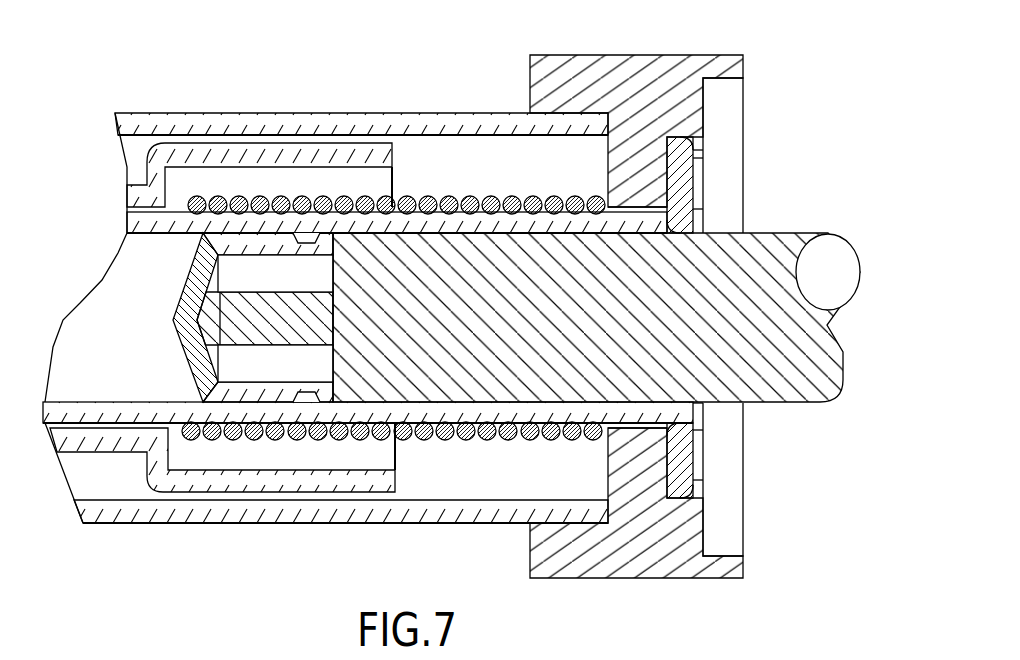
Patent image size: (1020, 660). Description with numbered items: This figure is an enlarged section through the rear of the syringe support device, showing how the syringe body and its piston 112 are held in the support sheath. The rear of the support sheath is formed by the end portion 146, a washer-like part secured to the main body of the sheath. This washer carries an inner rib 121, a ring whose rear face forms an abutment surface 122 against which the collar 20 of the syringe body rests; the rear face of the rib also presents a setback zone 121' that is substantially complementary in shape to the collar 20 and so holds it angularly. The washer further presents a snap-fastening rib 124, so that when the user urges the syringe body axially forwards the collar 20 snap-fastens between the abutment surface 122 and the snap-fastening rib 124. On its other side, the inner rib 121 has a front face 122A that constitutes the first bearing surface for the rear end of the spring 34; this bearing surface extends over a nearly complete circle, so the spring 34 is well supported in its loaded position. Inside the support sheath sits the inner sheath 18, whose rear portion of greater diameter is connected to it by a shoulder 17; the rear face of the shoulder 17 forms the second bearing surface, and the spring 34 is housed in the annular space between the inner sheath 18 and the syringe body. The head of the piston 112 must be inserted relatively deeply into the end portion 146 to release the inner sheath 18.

The end portion 146 is at (621, 80).
The setback zone 121' is at (760, 147).
The inner rib 121 is at (730, 175).
The piston 112 is at (764, 244).
The collar 20 is at (683, 442).
The snap-fastening rib 124 is at (700, 480).
The abutment surface 122 is at (700, 500).
The front face 122A is at (598, 430).
The inner sheath 18 is at (98, 445).
The shoulder 17 is at (160, 455).
The spring 34 is at (340, 503).